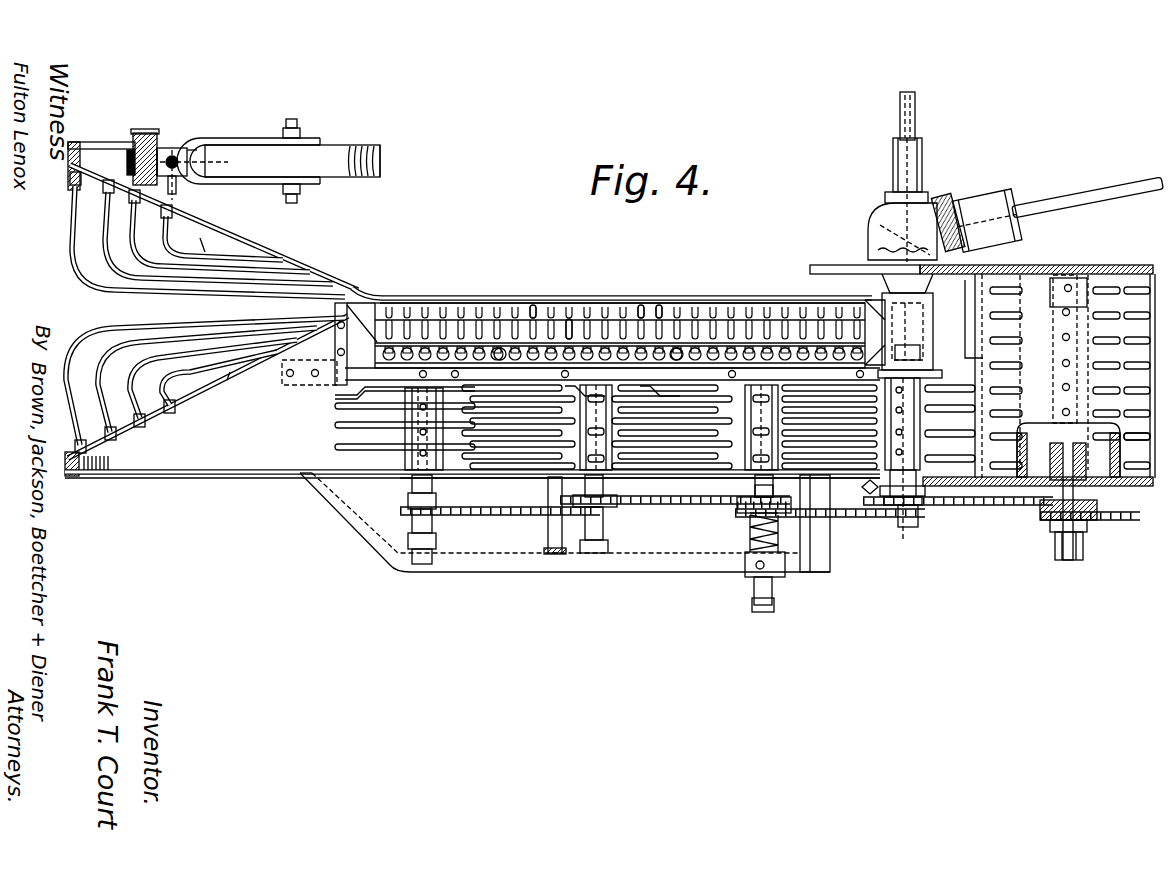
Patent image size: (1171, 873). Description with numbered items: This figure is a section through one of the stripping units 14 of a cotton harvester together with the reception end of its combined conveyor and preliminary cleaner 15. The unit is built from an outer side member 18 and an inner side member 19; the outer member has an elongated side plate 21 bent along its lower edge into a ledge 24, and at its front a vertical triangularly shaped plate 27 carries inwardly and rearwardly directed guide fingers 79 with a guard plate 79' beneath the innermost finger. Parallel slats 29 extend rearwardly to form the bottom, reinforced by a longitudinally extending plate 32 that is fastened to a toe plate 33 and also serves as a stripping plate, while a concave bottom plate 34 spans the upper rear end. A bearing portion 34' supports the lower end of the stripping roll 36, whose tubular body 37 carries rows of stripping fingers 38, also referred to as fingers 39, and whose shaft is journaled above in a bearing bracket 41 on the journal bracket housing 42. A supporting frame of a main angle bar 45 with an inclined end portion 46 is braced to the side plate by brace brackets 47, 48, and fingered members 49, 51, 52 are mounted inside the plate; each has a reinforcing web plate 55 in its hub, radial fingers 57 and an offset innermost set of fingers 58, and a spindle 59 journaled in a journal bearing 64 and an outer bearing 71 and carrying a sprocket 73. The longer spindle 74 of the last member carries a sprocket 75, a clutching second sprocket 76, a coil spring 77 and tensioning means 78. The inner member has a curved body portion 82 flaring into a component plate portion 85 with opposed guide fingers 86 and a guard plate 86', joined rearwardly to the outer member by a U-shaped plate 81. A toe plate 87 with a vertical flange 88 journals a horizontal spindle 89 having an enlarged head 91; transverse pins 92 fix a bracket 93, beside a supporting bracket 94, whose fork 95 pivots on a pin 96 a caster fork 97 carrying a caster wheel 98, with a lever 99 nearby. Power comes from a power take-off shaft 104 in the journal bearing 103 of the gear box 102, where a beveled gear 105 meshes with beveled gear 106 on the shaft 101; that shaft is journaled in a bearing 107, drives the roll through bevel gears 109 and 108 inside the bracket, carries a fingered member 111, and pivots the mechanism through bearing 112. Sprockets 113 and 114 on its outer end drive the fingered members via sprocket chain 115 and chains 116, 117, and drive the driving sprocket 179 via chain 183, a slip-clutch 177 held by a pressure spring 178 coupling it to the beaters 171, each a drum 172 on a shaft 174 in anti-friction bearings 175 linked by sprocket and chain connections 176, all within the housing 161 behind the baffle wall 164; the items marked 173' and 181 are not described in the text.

The stripping unit 14 is at (232, 480).
The combined conveyor and preliminary cleaner 15 is at (1124, 268).
The outer side member 18 is at (165, 476).
The inner side member 19 is at (356, 288).
The side plate 21 is at (185, 478).
The ledge 24 is at (480, 468).
The triangularly shaped plate 27 is at (227, 380).
The slats 29 is at (725, 425).
The longitudinally extending plate 32 is at (652, 362).
The toe plate 33 is at (310, 388).
The concave bottom plate 34 is at (922, 510).
The bearing portion 34' is at (612, 324).
The stripping roll 36 is at (535, 307).
The tubular body 37 is at (571, 320).
The stripping fingers 38 is at (659, 306).
The fingers 39 is at (498, 352).
The bearing bracket 41 is at (856, 313).
The journal bracket housing 42 is at (901, 350).
The main angle bar 45 is at (440, 573).
The inclined end portion 46 is at (376, 542).
The brace bracket 47 is at (553, 555).
The brace bracket 48 is at (808, 546).
The fingered member 49 is at (403, 429).
The fingered member 51 is at (603, 478).
The fingered member 52 is at (758, 462).
The reinforcing web plate 55 is at (410, 446).
The fingers 57 is at (333, 420).
The innermost set of fingers 58 is at (335, 381).
The shaft or spindle 59 is at (413, 529).
The journal bearing 64 is at (414, 489).
The bearing 71 is at (441, 540).
The sprocket 73 is at (409, 506).
The shaft or spindle 74 is at (748, 490).
The sprocket 75 is at (776, 497).
The second sprocket 76 is at (756, 514).
The coil spring 77 is at (757, 534).
The tensioning means 78 is at (757, 564).
The guide fingers 79 is at (205, 385).
The guard plate 79' is at (208, 387).
The U-shaped plate 81 is at (872, 300).
The curved body portion 82 is at (430, 298).
The component plate portion 85 is at (250, 243).
The guide fingers 86 is at (207, 240).
The guard plate 86' is at (221, 227).
The toe plate 87 is at (80, 150).
The vertical flange 88 is at (108, 142).
The horizontal spindle or shaft 89 is at (136, 150).
The enlarged head 91 is at (162, 148).
The transverse pins 92 is at (127, 160).
The bracket 93 is at (178, 150).
The supporting bracket 94 is at (175, 190).
The fork 95 is at (185, 152).
The pin 96 is at (278, 161).
The caster fork 97 is at (180, 158).
The caster wheel 98 is at (382, 150).
The lever 99 is at (145, 130).
The shaft 101 is at (906, 96).
The gear box 102 is at (884, 215).
The journal bearing 103 is at (1010, 200).
The power take-off shaft 104 is at (1075, 205).
The beveled gear 105 is at (948, 196).
The beveled gear 106 is at (876, 244).
The bearing 107 is at (895, 494).
The bevel gear 108 is at (893, 326).
The bevel gear 109 is at (925, 354).
The fingered member 111 is at (918, 444).
The bearing 112 is at (843, 475).
The sprocket 113 is at (916, 506).
The sprocket 114 is at (910, 520).
The sprocket chain 115 is at (846, 519).
The sprocket chain 116 is at (677, 506).
The sprocket chain 117 is at (506, 516).
The housing 161 is at (1102, 484).
The baffle wall 164 is at (994, 270).
The beater 171 is at (1112, 356).
The drum or hub 172 is at (1115, 455).
The column 173' is at (1057, 349).
The shaft 174 is at (1068, 441).
The anti-friction bearings 175 is at (1080, 455).
The sprocket and chain connections 176 is at (1127, 521).
The slip-clutch 177 is at (1080, 532).
The pressure spring 178 is at (1080, 556).
The driving sprocket 179 is at (1052, 514).
The collar 181 is at (1056, 528).
The sprocket chain 183 is at (983, 507).